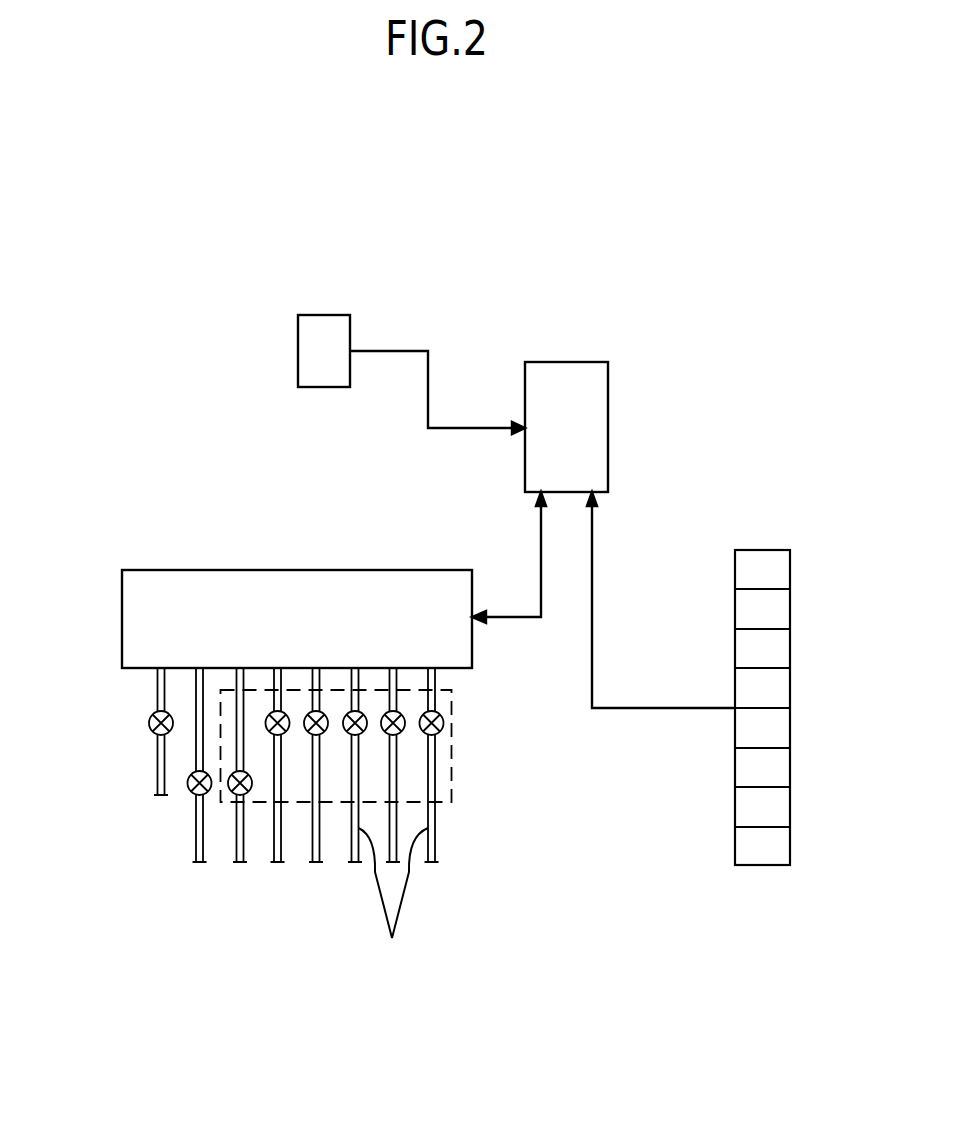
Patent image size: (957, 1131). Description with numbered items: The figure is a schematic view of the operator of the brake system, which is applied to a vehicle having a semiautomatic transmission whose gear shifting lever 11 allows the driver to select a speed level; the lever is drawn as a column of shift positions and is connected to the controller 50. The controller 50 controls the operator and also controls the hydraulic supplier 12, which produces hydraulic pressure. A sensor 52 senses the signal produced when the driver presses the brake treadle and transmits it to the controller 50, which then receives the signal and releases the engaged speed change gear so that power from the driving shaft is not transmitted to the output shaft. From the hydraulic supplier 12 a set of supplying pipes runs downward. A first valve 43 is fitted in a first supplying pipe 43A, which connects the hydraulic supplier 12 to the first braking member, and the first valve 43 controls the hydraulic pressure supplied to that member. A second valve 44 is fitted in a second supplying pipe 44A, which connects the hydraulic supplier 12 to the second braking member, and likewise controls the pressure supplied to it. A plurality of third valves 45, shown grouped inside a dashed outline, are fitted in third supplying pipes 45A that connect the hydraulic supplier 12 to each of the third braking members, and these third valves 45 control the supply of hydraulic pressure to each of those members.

The gear shifting lever 11 is at (790, 612).
The hydraulic supplier 12 is at (152, 582).
The first valve 43 is at (149, 724).
The first supplying pipe 43A is at (157, 777).
The second valve 44 is at (190, 792).
The second supplying pipe 44A is at (196, 826).
The third valves 45 is at (452, 750).
The third supplying pipe 45A is at (394, 900).
The controller 50 is at (608, 425).
The sensor 52 is at (327, 315).